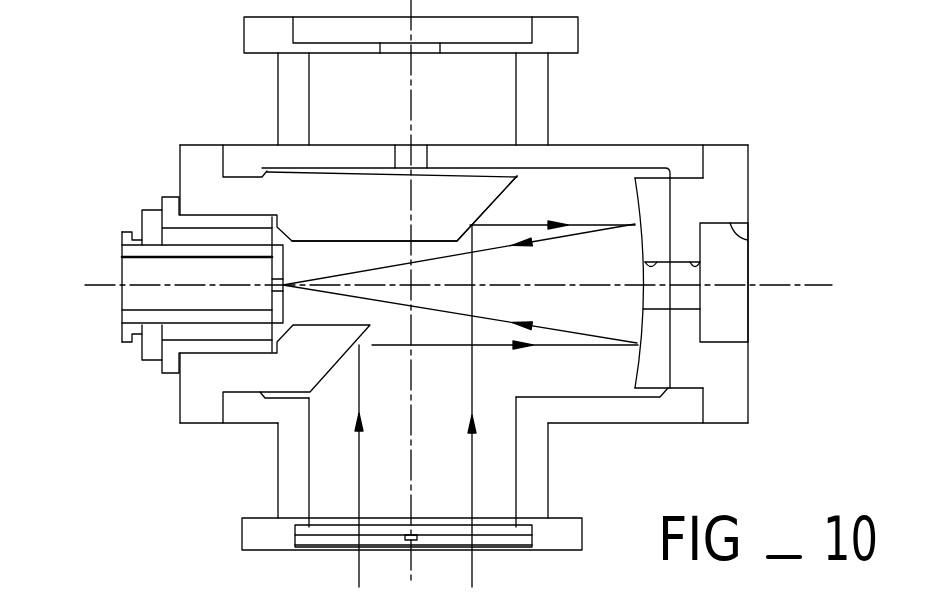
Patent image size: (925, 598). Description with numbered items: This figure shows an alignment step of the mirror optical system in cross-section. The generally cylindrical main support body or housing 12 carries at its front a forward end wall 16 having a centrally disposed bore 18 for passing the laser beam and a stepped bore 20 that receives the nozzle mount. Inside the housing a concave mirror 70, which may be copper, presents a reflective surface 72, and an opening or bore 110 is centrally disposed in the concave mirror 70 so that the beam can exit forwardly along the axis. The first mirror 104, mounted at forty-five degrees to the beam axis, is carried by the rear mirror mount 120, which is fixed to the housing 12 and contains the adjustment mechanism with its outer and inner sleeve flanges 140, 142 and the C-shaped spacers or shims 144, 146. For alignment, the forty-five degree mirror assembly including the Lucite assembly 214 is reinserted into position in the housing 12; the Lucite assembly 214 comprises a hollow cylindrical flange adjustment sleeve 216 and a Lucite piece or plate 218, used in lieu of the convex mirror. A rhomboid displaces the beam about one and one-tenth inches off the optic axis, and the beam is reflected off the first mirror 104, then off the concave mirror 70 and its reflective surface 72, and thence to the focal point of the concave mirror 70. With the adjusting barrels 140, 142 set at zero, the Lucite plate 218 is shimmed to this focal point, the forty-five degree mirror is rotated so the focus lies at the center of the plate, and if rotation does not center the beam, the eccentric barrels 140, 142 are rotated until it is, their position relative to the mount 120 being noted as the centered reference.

The main support body or housing 12 is at (595, 155).
The forward end wall 16 is at (728, 144).
The centrally disposed bore 18 is at (702, 272).
The stepped bore 20 is at (748, 240).
The concave mirror 70 is at (650, 176).
The reflective surface 72 is at (637, 195).
The first mirror 104 is at (470, 222).
The opening or bore 110 is at (648, 262).
The rear mirror mount 120 is at (312, 185).
The outer sleeve flange 140 is at (167, 197).
The inner sleeve flange 142 is at (152, 208).
The spacer or shim 144 is at (140, 238).
The spacer or shim 146 is at (137, 333).
The Lucite assembly 214 is at (207, 259).
The flange adjustment sleeve 216 is at (122, 238).
The Lucite piece or plate 218 is at (285, 268).